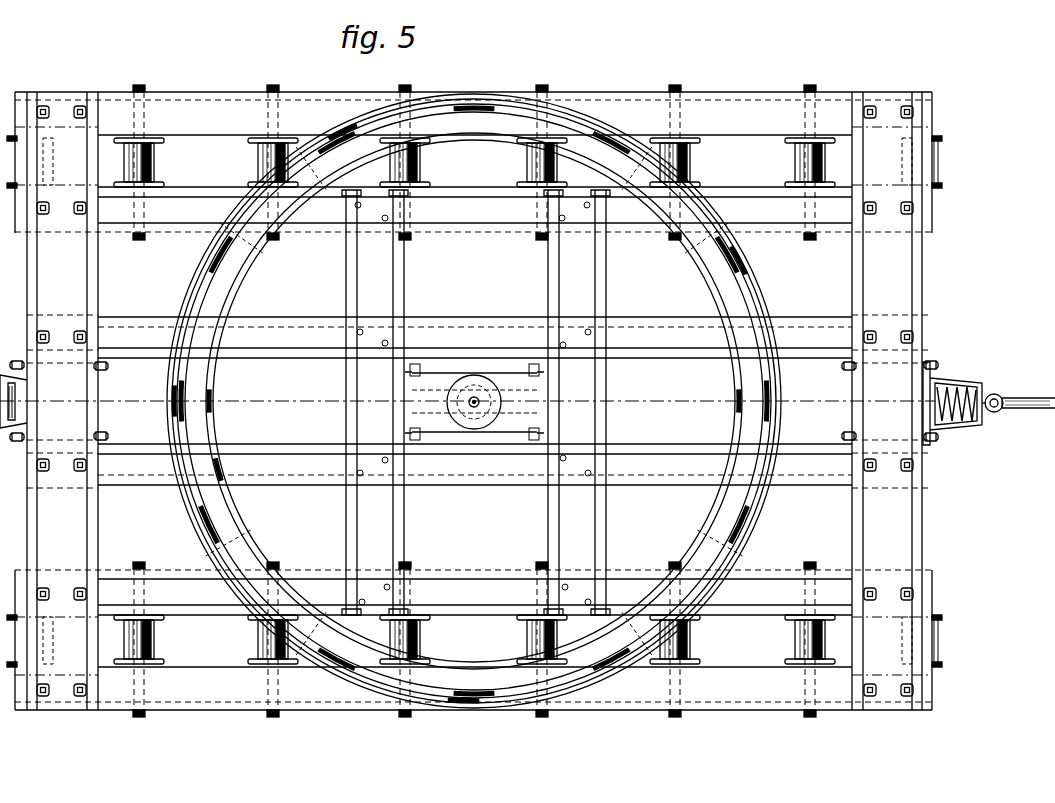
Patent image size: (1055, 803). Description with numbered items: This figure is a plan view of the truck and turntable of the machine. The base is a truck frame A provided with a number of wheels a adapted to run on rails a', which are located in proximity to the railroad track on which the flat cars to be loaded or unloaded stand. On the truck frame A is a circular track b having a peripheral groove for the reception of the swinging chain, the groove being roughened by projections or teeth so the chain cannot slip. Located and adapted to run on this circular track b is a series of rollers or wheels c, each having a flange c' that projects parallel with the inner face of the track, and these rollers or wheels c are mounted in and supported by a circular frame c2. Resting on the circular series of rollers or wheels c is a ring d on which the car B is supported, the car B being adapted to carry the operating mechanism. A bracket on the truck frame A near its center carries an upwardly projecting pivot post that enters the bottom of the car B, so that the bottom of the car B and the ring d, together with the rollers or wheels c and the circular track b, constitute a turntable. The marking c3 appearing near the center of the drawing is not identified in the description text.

The truck frame A is at (471, 391).
The car B is at (989, 403).
The wheels a is at (474, 401).
The rails a' is at (489, 411).
The circular track b is at (205, 284).
The rollers or wheels c is at (455, 422).
The flange c' is at (474, 401).
The circular frame c2 is at (212, 414).
The center bearing plate c3 is at (474, 402).
The ring d is at (500, 118).